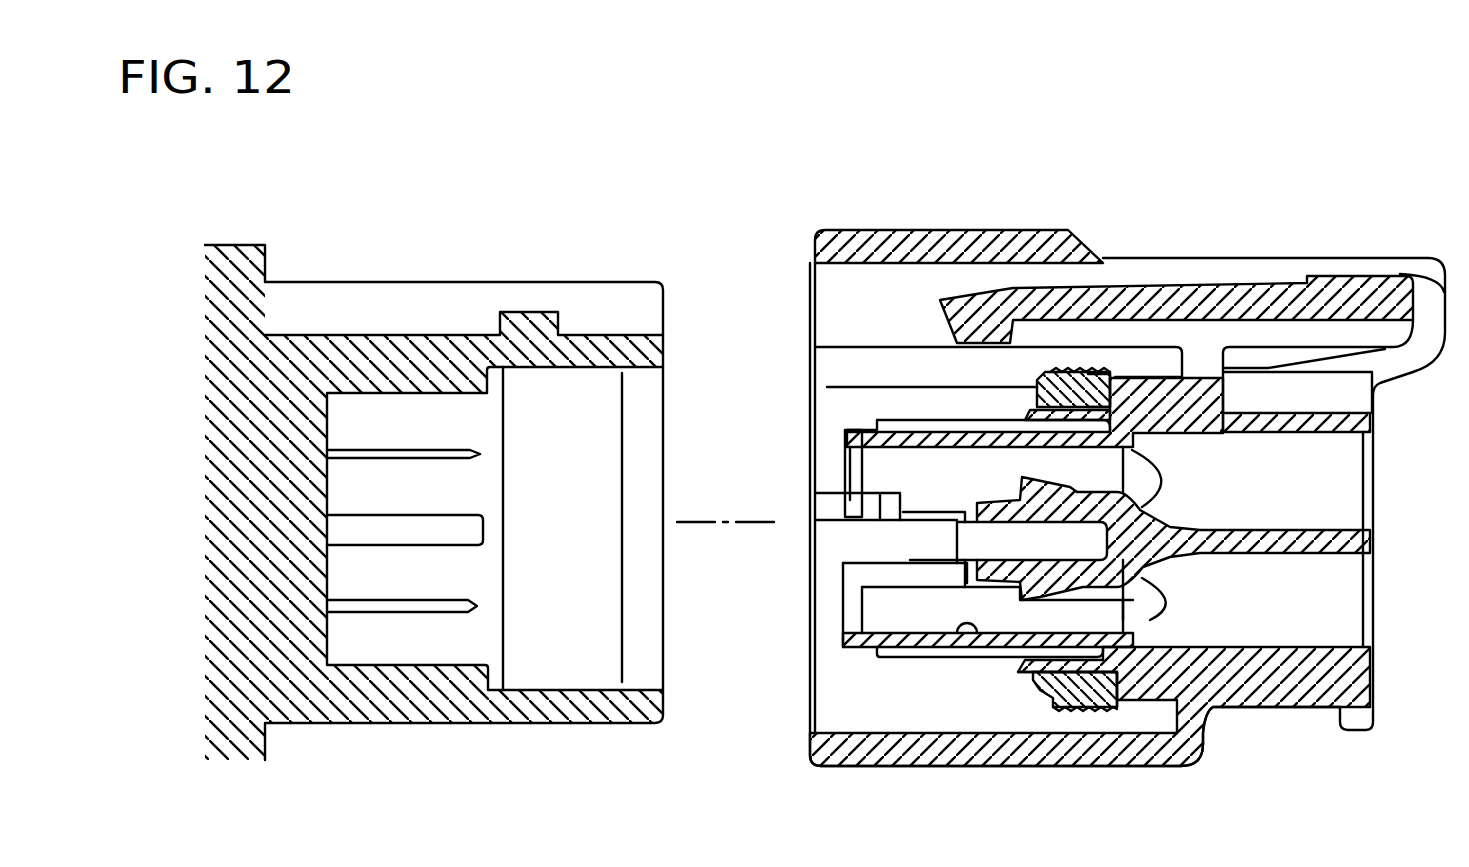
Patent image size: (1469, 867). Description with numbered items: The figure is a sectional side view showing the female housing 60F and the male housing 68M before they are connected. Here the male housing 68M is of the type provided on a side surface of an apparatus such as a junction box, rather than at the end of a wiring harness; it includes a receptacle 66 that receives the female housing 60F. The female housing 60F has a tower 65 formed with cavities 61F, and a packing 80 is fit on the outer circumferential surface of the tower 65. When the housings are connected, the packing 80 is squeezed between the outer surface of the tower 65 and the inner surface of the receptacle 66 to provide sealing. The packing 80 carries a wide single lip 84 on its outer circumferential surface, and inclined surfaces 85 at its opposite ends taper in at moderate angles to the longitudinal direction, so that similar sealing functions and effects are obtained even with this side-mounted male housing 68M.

The male housing 68M is at (452, 262).
The receptacle 66 is at (617, 343).
The female housing 60F is at (1127, 486).
The inclined surfaces 85 is at (1050, 377).
The wide single lip 84 is at (1088, 370).
The cavities 61F is at (962, 640).
The tower 65 is at (1048, 674).
The packing 80 is at (1097, 684).